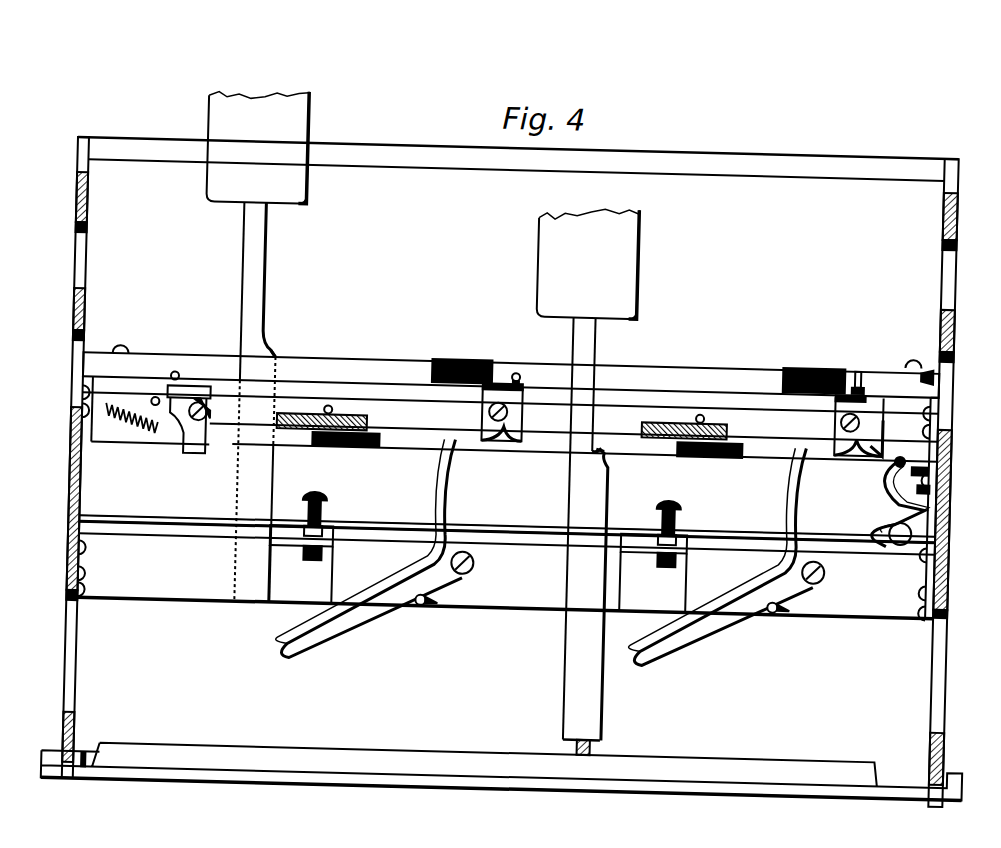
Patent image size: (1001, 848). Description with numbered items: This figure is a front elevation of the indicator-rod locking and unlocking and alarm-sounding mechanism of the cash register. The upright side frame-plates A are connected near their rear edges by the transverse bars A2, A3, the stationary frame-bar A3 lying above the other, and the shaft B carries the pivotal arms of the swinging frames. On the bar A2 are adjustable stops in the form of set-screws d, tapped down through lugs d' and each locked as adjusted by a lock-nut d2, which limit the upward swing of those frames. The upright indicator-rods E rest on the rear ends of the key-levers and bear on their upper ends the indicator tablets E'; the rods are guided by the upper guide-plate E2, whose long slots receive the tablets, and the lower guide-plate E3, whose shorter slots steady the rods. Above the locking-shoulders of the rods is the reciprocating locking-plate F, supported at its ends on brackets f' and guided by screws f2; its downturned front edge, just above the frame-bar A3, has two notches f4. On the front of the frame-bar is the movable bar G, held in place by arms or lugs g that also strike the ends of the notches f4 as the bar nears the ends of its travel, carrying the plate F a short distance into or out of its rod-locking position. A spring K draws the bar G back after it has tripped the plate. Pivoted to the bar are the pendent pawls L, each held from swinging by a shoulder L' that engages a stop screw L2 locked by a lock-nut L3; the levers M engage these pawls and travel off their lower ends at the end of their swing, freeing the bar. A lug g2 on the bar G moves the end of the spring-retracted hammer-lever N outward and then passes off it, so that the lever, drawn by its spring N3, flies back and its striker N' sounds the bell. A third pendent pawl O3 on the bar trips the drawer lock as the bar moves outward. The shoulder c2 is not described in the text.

The upright side frame-plates A is at (78, 468).
The transverse frame-bar A2 is at (506, 556).
The stationary frame-bar A3 is at (432, 441).
The shaft B is at (606, 734).
The indicator-rods E is at (422, 471).
The indicator plates or tablets E' is at (270, 146).
The upper guide-plate E2 is at (503, 158).
The lower guide-plate E3 is at (553, 518).
The reciprocating locking-plate F is at (408, 358).
The lugs or brackets f' is at (946, 378).
The screws f2 is at (133, 351).
The notches f4 is at (483, 350).
The movable bar G is at (502, 421).
The arms or lugs g is at (445, 401).
The lug g2 is at (892, 416).
The spring K is at (134, 412).
The pendent pawls L is at (682, 433).
The shoulder or short arm L' is at (693, 410).
The screw L2 is at (526, 362).
The lock-nut L3 is at (531, 376).
The levers M is at (413, 575).
The hammer-lever N is at (900, 501).
The striker N' is at (899, 547).
The spring N3 is at (938, 449).
The third pendent pawl O3 is at (200, 442).
The hook of stem c2 is at (282, 352).
The set-screws d is at (489, 561).
The lugs d' is at (491, 556).
The lock-nut d2 is at (312, 515).